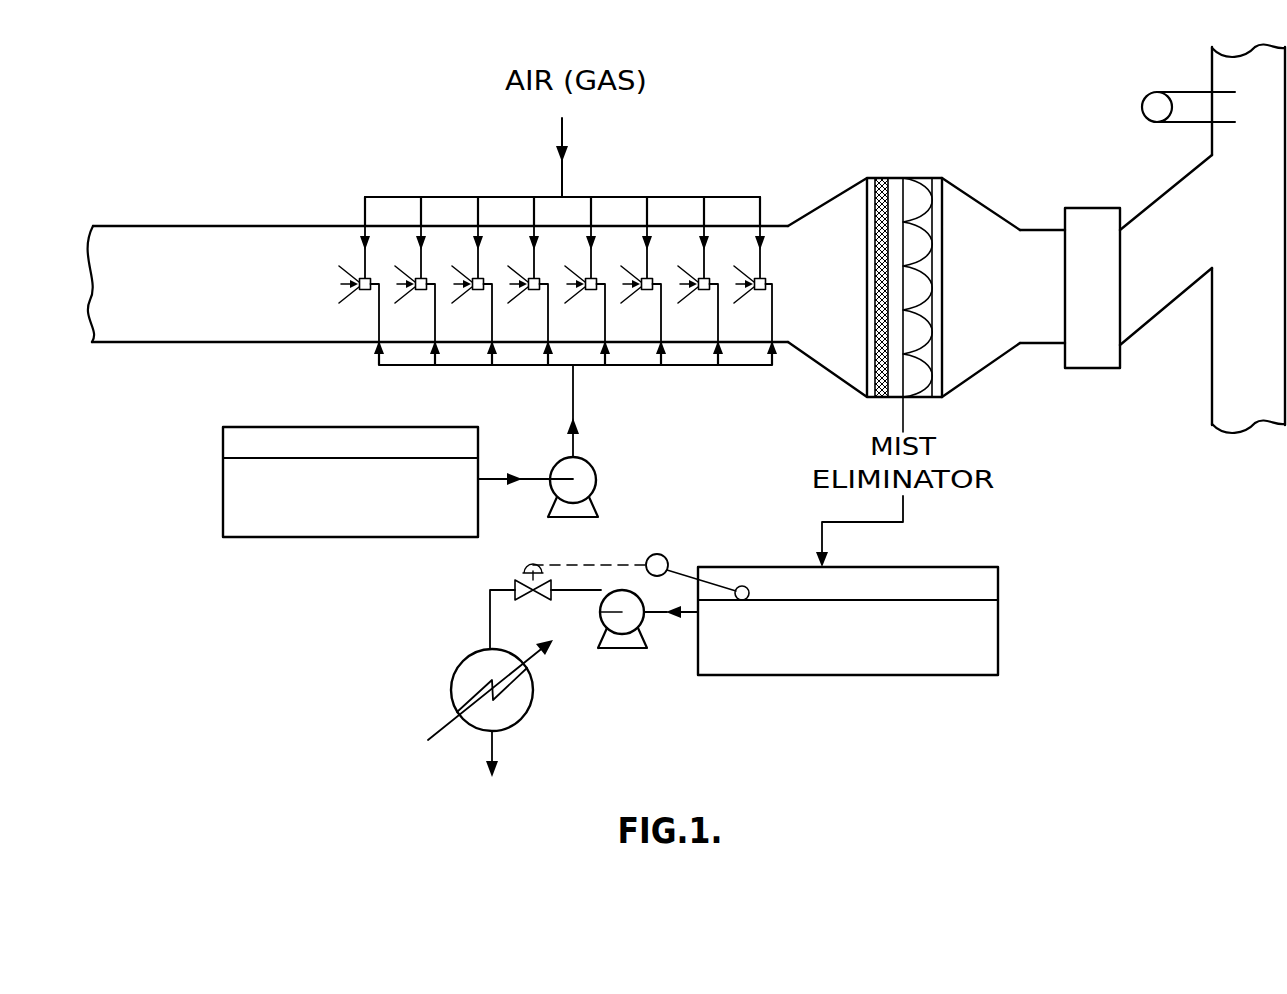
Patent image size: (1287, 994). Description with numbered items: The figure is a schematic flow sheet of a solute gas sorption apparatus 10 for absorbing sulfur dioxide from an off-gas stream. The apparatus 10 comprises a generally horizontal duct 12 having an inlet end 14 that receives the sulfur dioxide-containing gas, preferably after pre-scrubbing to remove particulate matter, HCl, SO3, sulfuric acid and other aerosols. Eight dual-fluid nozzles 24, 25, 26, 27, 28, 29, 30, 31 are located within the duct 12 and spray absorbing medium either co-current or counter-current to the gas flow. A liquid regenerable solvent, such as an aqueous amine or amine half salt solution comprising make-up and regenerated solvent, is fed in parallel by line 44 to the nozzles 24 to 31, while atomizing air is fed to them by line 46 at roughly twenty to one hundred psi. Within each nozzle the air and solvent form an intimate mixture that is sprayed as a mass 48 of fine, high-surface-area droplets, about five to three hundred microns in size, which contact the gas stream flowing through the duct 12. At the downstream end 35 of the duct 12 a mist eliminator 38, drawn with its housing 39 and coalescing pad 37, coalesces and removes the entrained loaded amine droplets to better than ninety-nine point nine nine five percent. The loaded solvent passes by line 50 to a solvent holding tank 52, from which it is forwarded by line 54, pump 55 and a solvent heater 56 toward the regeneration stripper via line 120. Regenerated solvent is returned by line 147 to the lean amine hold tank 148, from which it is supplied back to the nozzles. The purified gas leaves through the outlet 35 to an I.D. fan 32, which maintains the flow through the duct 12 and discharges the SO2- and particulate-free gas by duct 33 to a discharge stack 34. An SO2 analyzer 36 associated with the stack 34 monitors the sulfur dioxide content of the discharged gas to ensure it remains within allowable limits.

The solute gas sorption apparatus 10 is at (228, 114).
The duct 12 is at (286, 226).
The inlet end 14 is at (335, 283).
The dual-fluid nozzle 24 is at (371, 278).
The dual-fluid nozzle 25 is at (427, 278).
The dual-fluid nozzle 26 is at (484, 278).
The dual-fluid nozzle 27 is at (540, 278).
The dual-fluid nozzle 28 is at (597, 278).
The dual-fluid nozzle 29 is at (653, 278).
The dual-fluid nozzle 30 is at (710, 278).
The dual-fluid nozzle 31 is at (767, 280).
The I.D. fan 32 is at (1092, 368).
The duct 33 is at (1166, 191).
The discharge stack 34 is at (1206, 72).
The downstream end 35 is at (1040, 345).
The SO2 analyzer 36 is at (1144, 101).
The mist eliminator pad 37 is at (942, 199).
The mist eliminator 38 is at (958, 386).
The mist eliminator housing 39 is at (868, 181).
The line 44 is at (642, 367).
The line 46 is at (673, 197).
The mass of fine liquid droplets 48 is at (356, 312).
The line 50 is at (903, 508).
The solvent holding tank 52 is at (735, 676).
The line 54 is at (490, 615).
The pump 55 is at (601, 648).
The solvent heater 56 is at (452, 681).
The line 120 is at (497, 749).
The line 147 is at (223, 447).
The lean amine hold tank 148 is at (357, 537).